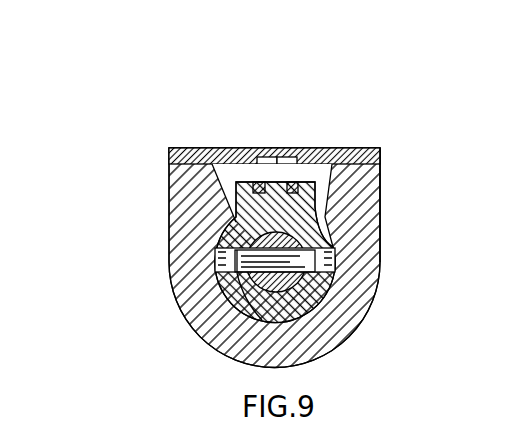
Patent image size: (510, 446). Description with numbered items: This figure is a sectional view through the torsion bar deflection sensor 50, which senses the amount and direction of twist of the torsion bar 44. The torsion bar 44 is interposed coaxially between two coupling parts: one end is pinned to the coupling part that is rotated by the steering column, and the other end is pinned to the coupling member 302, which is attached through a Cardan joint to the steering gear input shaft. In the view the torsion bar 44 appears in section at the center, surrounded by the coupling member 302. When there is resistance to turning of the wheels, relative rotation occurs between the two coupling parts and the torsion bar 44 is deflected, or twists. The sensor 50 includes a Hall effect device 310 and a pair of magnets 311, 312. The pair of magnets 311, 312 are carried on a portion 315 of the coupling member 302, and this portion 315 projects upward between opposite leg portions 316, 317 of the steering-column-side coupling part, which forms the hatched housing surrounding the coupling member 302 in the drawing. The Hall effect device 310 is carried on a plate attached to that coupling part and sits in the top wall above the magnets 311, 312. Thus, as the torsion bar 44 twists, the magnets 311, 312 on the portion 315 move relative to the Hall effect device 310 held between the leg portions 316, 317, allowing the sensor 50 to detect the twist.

The torsion bar deflection sensor 50 is at (250, 213).
The coupling member 302 is at (233, 313).
The Hall effect device 310 is at (273, 163).
The magnet 311 is at (255, 181).
The magnet 312 is at (300, 183).
The portion of the coupling part 315 is at (305, 290).
The leg portion 316 is at (183, 197).
The leg portion 317 is at (356, 207).
The torsion bar 44 is at (273, 282).